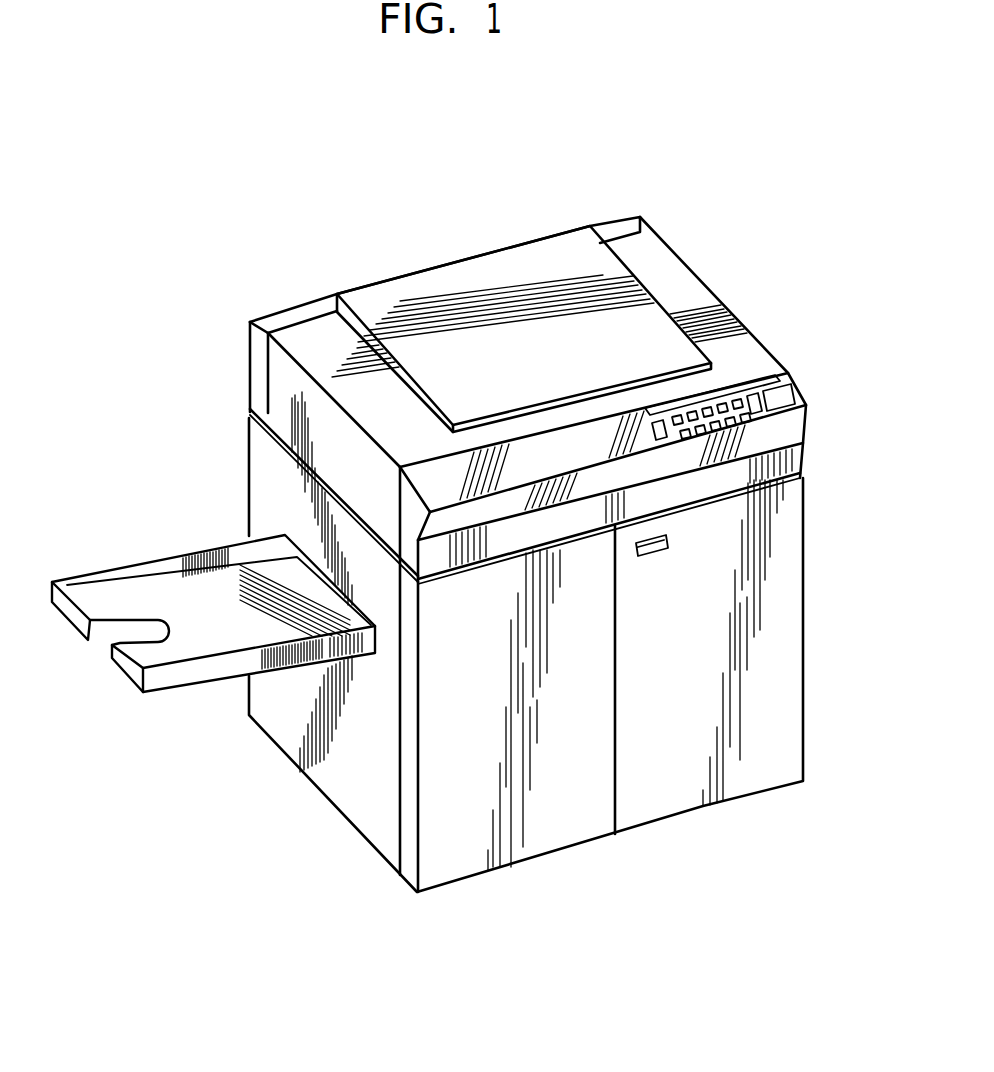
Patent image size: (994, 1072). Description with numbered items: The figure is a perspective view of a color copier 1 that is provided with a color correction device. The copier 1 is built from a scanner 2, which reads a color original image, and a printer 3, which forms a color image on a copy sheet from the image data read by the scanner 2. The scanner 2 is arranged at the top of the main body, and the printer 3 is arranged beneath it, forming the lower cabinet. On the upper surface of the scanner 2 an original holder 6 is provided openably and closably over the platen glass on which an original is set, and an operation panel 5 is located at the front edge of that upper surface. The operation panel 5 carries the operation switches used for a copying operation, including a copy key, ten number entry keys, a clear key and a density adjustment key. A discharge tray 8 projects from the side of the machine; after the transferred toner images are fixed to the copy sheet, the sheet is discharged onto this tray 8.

The color copier 1 is at (684, 189).
The scanner 2 is at (729, 311).
The printer 3 is at (805, 532).
The operation panel 5 is at (793, 383).
The original holder 6 is at (657, 303).
The discharge tray 8 is at (155, 562).